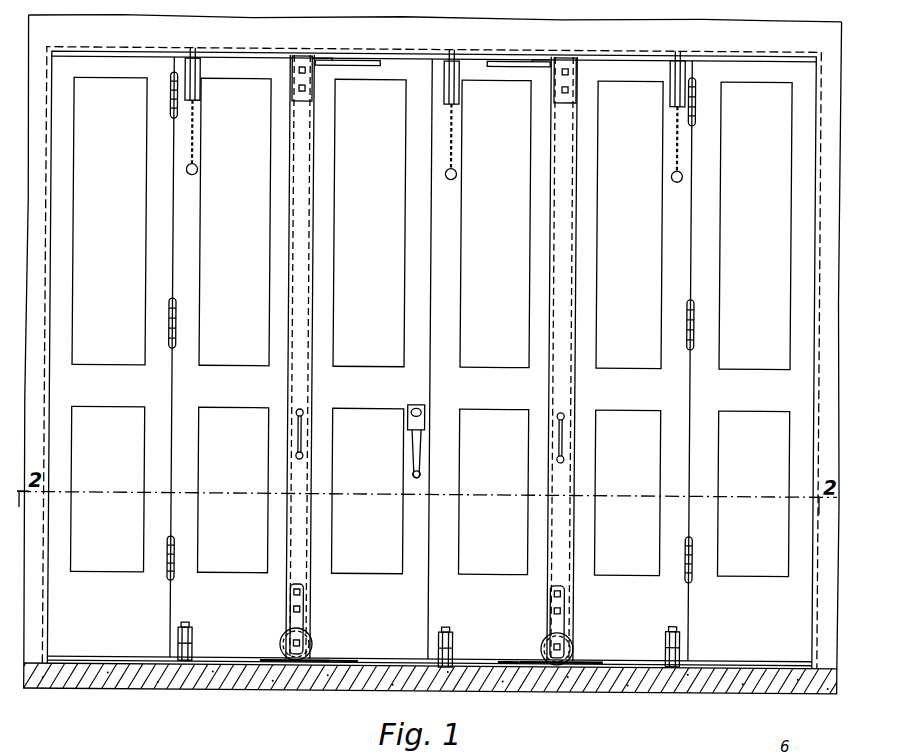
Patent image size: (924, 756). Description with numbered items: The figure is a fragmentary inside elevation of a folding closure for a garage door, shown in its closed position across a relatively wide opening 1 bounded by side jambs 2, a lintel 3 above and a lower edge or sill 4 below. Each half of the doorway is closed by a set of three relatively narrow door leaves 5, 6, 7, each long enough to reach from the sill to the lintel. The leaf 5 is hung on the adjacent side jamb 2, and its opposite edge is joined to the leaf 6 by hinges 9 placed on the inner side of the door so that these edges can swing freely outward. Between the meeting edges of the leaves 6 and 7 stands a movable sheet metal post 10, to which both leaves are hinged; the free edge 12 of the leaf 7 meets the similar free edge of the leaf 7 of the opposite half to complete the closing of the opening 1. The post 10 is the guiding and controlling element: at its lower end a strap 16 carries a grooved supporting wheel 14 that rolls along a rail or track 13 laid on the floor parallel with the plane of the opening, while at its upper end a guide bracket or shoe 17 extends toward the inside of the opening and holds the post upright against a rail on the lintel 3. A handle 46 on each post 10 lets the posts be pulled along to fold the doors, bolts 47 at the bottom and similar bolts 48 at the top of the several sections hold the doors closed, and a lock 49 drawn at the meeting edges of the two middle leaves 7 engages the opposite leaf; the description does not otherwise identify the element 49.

The opening 1 is at (121, 54).
The jambs 2 is at (36, 252).
The lintel 3 is at (250, 42).
The sill 4 is at (105, 660).
The door leaf 5 is at (152, 648).
The door leaf 6 is at (252, 650).
The door leaf 7 is at (365, 658).
The hinges 9 is at (168, 103).
The movable post 10 is at (311, 284).
The edge of leaf 12 is at (432, 270).
The rail or track 13 is at (127, 660).
The grooved supporting wheel 14 is at (313, 648).
The strap 16 is at (292, 602).
The guide bracket or shoe 17 is at (342, 66).
The handle 46 is at (299, 436).
The bolts 47 is at (194, 639).
The bolts 48 is at (198, 92).
The latch 49 is at (410, 430).